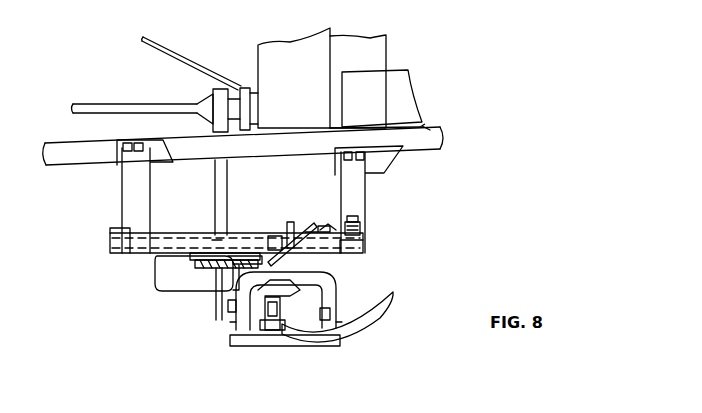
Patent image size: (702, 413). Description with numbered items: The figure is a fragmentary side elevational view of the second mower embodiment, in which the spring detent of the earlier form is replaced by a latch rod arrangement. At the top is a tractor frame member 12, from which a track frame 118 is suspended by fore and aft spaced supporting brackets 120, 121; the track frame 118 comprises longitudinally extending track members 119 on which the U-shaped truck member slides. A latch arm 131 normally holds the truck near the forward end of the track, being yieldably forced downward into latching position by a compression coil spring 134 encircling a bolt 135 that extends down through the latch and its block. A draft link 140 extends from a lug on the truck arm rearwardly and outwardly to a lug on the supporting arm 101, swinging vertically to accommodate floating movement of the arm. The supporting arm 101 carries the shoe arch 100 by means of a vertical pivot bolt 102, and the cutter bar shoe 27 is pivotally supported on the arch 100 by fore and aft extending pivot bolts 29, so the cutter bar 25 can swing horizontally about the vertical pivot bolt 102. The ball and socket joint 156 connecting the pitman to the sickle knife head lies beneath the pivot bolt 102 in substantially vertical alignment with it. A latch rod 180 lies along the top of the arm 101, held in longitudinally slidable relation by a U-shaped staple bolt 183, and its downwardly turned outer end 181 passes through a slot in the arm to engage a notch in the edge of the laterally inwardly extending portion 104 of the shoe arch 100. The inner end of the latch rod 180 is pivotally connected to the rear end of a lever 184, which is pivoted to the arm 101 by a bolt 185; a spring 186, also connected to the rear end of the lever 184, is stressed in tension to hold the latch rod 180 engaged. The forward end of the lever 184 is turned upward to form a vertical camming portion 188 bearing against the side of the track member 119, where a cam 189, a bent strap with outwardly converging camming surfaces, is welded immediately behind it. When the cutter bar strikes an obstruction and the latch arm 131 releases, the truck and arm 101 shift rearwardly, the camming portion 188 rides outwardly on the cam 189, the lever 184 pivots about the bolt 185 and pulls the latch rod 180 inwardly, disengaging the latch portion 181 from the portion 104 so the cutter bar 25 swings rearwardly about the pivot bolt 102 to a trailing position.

The tractor frame member 12 is at (422, 127).
The supporting bracket 121 is at (136, 189).
The supporting bracket 120 is at (355, 180).
The lever 184 is at (240, 243).
The track frame 118 is at (367, 260).
The track member 119 is at (168, 244).
The bolt 185 is at (216, 245).
The cam 189 is at (272, 236).
The vertical camming portion 188 is at (290, 222).
The draft link 140 is at (292, 252).
The latch arm 131 is at (331, 231).
The bolt 135 is at (358, 216).
The compression coil spring 134 is at (361, 225).
The supporting arm 101 is at (185, 252).
The spring 186 is at (198, 263).
The U-shaped staple bolt 183 is at (208, 268).
The latch rod 180 is at (218, 272).
The downwardly turned outer end 181 is at (218, 292).
The laterally inwardly extending portion 104 is at (234, 320).
The pivot bolt 29 is at (230, 320).
The vertical pivot bolt 102 is at (322, 269).
The shoe arch 100 is at (330, 293).
The ball and socket joint 156 is at (279, 310).
The cutter bar 25 is at (252, 346).
The cutter bar shoe 27 is at (386, 312).